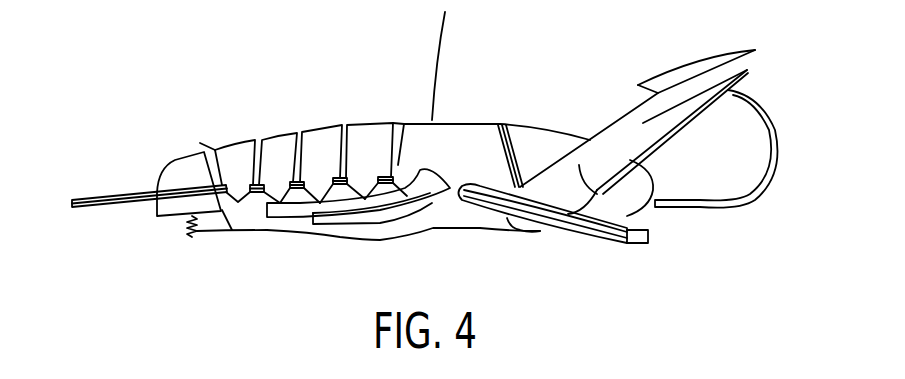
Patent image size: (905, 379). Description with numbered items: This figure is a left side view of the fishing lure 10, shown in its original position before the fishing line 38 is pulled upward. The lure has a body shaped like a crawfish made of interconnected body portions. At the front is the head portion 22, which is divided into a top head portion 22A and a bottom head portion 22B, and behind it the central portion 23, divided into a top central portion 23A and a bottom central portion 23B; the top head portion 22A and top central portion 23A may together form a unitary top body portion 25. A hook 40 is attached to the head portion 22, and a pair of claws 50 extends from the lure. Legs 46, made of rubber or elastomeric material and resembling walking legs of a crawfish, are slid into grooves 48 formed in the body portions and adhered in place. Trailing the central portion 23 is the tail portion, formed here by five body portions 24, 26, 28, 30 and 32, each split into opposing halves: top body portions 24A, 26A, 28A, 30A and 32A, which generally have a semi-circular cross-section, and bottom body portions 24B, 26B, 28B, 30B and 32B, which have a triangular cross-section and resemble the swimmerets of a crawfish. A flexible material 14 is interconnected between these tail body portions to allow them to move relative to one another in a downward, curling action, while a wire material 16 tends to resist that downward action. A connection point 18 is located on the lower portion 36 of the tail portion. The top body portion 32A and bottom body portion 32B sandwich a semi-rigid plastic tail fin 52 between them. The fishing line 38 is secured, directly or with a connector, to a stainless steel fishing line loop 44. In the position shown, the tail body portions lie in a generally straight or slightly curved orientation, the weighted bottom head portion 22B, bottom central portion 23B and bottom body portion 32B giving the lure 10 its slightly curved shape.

The fishing lure 10 is at (600, 55).
The flexible material 14 is at (247, 145).
The wire material 16 is at (303, 210).
The connection point 18 is at (183, 220).
The head portion 22 is at (655, 236).
The top head portion 22A is at (550, 137).
The bottom head portion 22B is at (550, 240).
The central portion 23 is at (417, 122).
The top central portion 23A is at (430, 150).
The bottom central portion 23B is at (490, 231).
The body portion 24 is at (383, 124).
The top body portion 24A is at (355, 143).
The bottom body portion 24B is at (366, 198).
The unitary top body portion 25 is at (513, 127).
The body portion 26 is at (310, 130).
The top body portion 26A is at (323, 143).
The bottom body portion 26B is at (320, 203).
The body portion 28 is at (287, 133).
The top body portion 28A is at (262, 140).
The bottom body portion 28B is at (280, 203).
The body portion 30 is at (232, 152).
The top body portion 30A is at (240, 147).
The bottom body portion 30B is at (242, 230).
The body portion 32 is at (173, 172).
The top body portion 32A is at (157, 187).
The bottom body portion 32B is at (153, 203).
The lower portion 36 is at (163, 223).
The fishing line 38 is at (447, 55).
The hook 40 is at (770, 147).
The fishing line loop 44 is at (197, 237).
The legs 46 is at (415, 213).
The grooves 48 is at (410, 197).
The claws 50 is at (693, 102).
The tail fin 52 is at (83, 200).